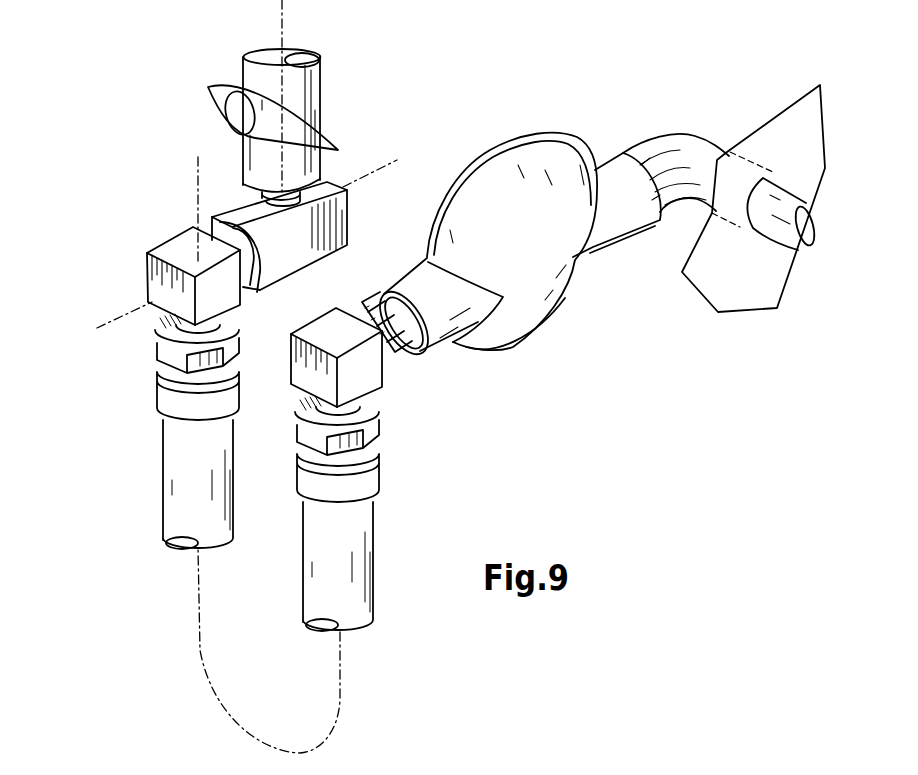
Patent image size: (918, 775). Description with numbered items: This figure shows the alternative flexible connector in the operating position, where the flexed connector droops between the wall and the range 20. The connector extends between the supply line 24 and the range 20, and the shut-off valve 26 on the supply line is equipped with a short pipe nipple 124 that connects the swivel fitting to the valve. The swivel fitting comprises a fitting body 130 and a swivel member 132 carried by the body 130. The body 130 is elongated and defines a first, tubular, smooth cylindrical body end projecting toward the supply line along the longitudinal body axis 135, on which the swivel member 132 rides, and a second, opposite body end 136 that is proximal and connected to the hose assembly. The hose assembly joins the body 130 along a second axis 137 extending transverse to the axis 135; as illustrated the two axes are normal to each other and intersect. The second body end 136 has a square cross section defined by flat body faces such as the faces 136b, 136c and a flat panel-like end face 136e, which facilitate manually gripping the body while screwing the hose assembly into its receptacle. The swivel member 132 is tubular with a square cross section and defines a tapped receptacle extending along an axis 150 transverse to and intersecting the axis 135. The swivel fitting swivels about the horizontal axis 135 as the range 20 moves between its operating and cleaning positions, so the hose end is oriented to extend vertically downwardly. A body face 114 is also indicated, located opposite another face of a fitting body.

The range 20 is at (746, 296).
The supply line 24 is at (332, 78).
The shut-off valve 26 is at (312, 170).
The body face 114 is at (347, 335).
The pipe nipple 124 is at (258, 196).
The fitting body 130 is at (184, 263).
The swivel member 132 is at (350, 212).
The longitudinal body axis 135 is at (97, 330).
The second body end 136 is at (184, 375).
The body face 136b is at (220, 290).
The body face 136c is at (172, 240).
The end face 136e is at (180, 285).
The second axis 137 is at (198, 187).
The axis 150 is at (283, 12).